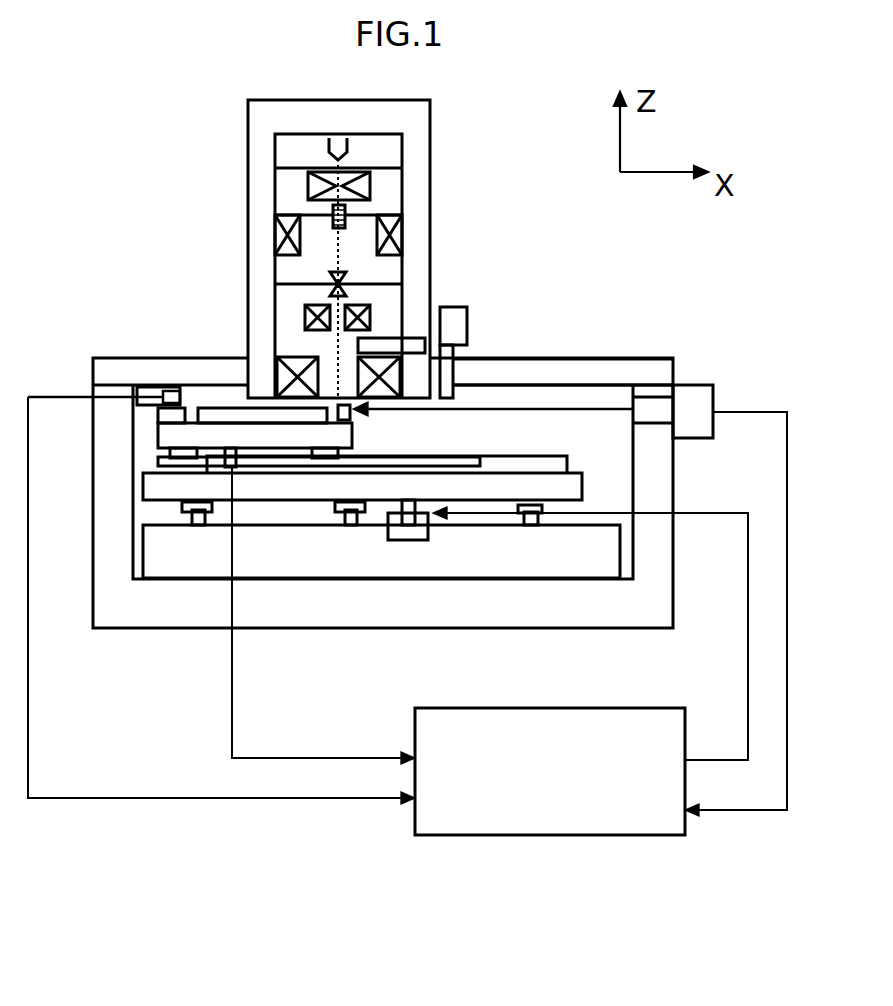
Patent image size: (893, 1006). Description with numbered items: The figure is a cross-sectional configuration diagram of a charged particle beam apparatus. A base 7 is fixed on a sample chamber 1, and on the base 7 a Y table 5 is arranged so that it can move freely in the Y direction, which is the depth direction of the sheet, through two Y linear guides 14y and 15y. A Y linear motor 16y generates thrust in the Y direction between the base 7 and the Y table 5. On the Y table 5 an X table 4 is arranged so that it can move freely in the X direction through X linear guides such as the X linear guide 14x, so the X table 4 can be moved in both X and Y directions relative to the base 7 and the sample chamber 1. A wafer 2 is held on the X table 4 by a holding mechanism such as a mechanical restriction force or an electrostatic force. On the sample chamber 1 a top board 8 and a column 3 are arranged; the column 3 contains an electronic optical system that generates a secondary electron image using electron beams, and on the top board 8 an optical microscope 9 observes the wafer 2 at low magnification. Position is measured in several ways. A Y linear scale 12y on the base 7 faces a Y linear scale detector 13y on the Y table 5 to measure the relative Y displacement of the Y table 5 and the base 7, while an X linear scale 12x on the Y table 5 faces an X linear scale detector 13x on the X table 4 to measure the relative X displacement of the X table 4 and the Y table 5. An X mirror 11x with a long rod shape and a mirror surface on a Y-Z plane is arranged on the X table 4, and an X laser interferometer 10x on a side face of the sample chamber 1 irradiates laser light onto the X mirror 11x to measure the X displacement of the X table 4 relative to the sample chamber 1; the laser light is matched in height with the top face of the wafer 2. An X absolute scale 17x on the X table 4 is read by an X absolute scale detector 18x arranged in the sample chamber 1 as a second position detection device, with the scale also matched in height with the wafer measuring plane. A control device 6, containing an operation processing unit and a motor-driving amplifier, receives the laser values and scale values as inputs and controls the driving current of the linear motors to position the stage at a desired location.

The sample chamber 1 is at (672, 555).
The wafer 2 is at (222, 436).
The column 3 is at (430, 210).
The X table 4 is at (217, 416).
The Y table 5 is at (556, 490).
The control device 6 is at (622, 822).
The base 7 is at (607, 560).
The top board 8 is at (493, 360).
The optical microscope 9 is at (455, 320).
The X laser interferometer 10x is at (694, 412).
The X mirror 11x is at (362, 385).
The X linear scale 12x is at (284, 478).
The X linear scale detector 13x is at (240, 470).
The X linear guide 14x is at (505, 468).
The Y linear guide 14y is at (197, 522).
The Y linear scale 12y is at (345, 505).
The Y linear scale detector 13y is at (356, 522).
The Y linear guide 15y is at (535, 512).
The Y linear motor 16y is at (412, 528).
The X absolute scale 17x is at (150, 388).
The X absolute scale detector 18x is at (172, 392).